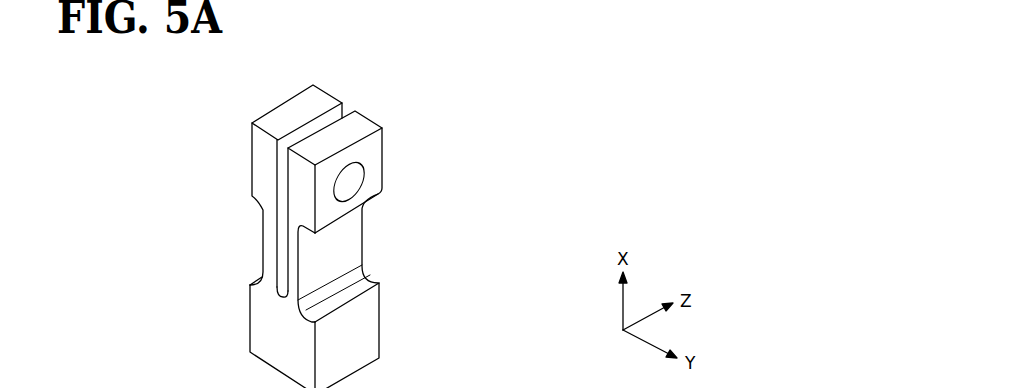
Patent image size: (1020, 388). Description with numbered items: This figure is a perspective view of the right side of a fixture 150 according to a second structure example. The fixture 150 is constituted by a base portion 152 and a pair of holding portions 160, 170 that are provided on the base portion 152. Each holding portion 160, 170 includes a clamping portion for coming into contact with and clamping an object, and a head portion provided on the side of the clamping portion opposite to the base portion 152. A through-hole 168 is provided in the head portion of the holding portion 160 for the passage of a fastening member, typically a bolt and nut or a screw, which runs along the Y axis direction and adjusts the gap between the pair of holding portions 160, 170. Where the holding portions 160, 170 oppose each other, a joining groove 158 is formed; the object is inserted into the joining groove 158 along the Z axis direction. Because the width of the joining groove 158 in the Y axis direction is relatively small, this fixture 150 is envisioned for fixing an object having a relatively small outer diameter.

The fixture 150 is at (591, 40).
The base portion 152 is at (368, 343).
The joining groove 158 is at (285, 254).
The holding portion 160 is at (378, 107).
The through-hole 168 is at (354, 184).
The holding portion 170 is at (278, 89).